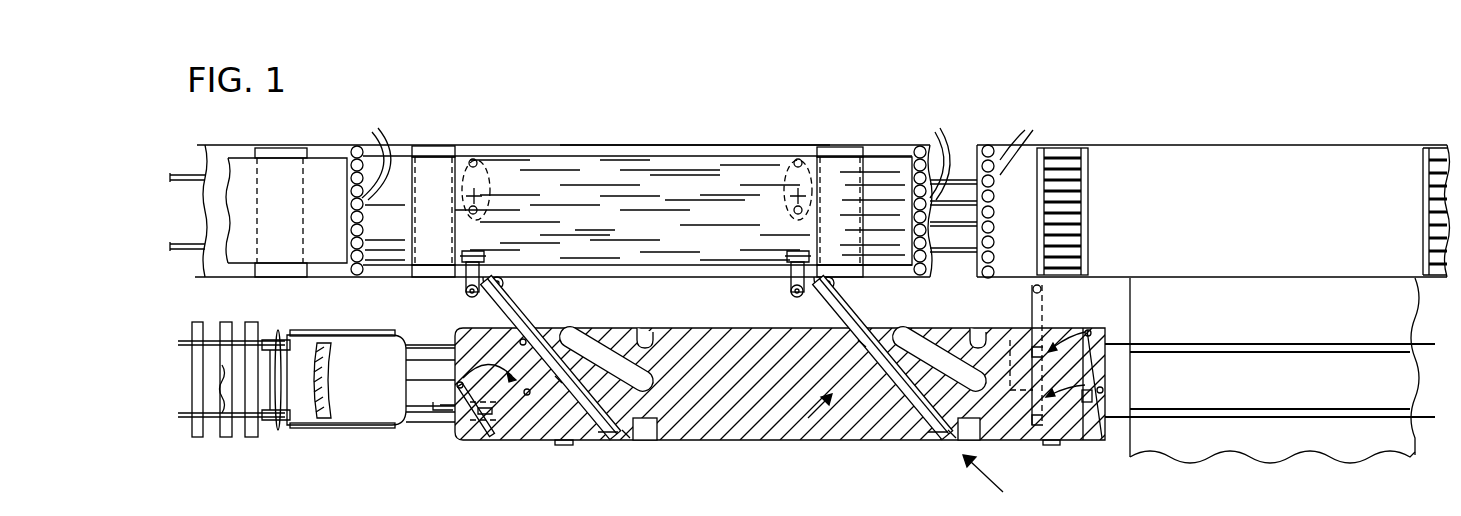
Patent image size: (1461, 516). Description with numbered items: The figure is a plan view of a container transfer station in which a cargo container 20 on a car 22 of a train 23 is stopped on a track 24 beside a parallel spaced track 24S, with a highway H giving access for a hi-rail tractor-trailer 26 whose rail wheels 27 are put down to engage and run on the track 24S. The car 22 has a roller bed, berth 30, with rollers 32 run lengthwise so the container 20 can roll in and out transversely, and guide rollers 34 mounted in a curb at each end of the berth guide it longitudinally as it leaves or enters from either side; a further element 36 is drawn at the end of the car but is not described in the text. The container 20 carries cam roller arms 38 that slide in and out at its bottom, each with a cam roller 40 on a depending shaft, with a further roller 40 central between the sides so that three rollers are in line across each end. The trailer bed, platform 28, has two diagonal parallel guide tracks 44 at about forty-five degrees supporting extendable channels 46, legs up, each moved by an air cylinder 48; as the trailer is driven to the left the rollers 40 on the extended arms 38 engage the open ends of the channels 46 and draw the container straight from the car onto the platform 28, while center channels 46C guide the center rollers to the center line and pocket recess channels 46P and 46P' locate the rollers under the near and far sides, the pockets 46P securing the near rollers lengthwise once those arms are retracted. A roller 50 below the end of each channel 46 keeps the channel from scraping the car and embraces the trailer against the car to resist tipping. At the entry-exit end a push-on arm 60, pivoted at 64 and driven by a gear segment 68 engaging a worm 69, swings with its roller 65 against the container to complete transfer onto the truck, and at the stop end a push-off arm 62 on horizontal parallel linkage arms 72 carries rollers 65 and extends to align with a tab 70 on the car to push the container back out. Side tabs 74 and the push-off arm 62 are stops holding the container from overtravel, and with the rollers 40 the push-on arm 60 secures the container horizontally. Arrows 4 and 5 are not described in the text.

The direction arrow 4 is at (990, 485).
The direction arrow 5 is at (804, 435).
The cargo container 20 is at (550, 152).
The car 22 is at (643, 150).
The train 23 is at (697, 147).
The track 24 is at (192, 242).
The parallel spaced track 24S is at (1325, 325).
The hi-rail tractor-trailer 26 is at (368, 430).
The rail wheels 27 is at (255, 437).
The platform 28 is at (748, 432).
The berth 30 is at (217, 148).
The rollers 32 is at (272, 150).
The guide rollers 34 is at (363, 152).
The guide box 36 is at (905, 158).
The cam roller arms 38 is at (462, 284).
The cam roller 40 is at (478, 158).
The diagonal parallel guide tracks 44 is at (645, 440).
The extendable channel 46 is at (530, 318).
The center channels 46C is at (597, 336).
The pocket recess channels 46P is at (833, 459).
The pocket recess channels 46P' is at (830, 322).
The air cylinder 48 is at (610, 440).
The roller 50 is at (503, 288).
The push-on arm 60 is at (458, 428).
The push-off arm 62 is at (1087, 347).
The pivot 64 is at (495, 436).
The roller 65 is at (457, 383).
The gear segment 68 is at (470, 432).
The worm 69 is at (506, 425).
The tab 70 is at (352, 148).
The horizontal parallel linkage arms 72 is at (1104, 403).
The side tabs 74 is at (560, 446).
The highway H is at (1397, 444).